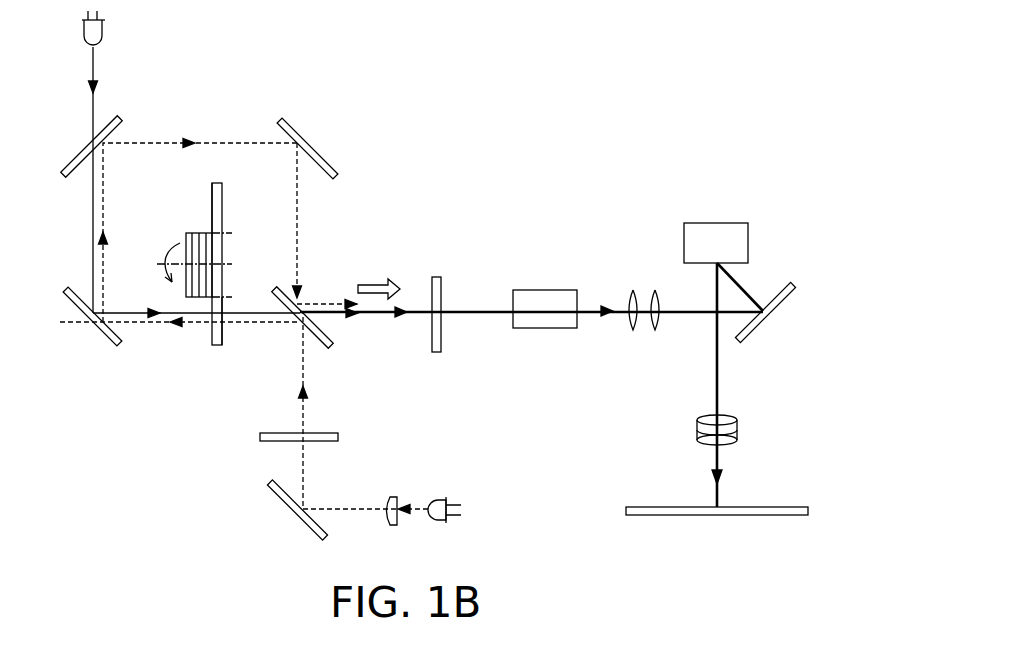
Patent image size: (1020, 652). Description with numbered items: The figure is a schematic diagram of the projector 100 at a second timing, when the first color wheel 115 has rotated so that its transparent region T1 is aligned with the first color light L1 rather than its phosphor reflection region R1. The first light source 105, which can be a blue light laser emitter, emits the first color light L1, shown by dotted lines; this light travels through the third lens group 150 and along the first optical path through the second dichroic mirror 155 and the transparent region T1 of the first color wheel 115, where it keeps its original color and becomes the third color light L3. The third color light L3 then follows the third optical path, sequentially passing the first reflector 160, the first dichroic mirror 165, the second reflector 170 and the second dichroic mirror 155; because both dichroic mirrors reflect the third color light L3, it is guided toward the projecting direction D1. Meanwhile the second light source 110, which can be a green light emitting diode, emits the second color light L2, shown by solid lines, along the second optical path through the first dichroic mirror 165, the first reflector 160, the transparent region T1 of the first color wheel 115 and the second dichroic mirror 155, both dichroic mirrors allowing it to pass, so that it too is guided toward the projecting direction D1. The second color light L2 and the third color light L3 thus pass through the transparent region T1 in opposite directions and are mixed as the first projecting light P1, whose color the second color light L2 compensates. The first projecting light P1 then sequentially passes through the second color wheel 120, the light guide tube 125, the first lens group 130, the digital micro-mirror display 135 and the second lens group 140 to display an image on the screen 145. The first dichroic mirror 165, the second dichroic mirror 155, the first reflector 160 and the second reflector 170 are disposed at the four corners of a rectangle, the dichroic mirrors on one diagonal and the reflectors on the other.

The projector 100 is at (481, 80).
The first light source 105 is at (444, 500).
The second light source 110 is at (104, 25).
The first color wheel 115 is at (213, 183).
The second color wheel 120 is at (436, 276).
The light guide tube 125 is at (547, 290).
The first lens group 130 is at (740, 340).
The digital micro-mirror display (DMD) 135 is at (716, 223).
The second lens group 140 is at (737, 426).
The screen 145 is at (783, 507).
The third lens group 150 is at (392, 527).
The second dichroic mirror 155 is at (328, 344).
The first reflector 160 is at (108, 345).
The first dichroic mirror 165 is at (118, 122).
The second reflector 170 is at (330, 170).
The first color light L1 is at (417, 505).
The second color light L2 is at (385, 372).
The third color light L3 is at (322, 258).
The projecting direction D1 is at (379, 276).
The first projecting light P1 is at (413, 316).
The phosphor reflection region R1 is at (222, 218).
The transparent region T1 is at (223, 342).